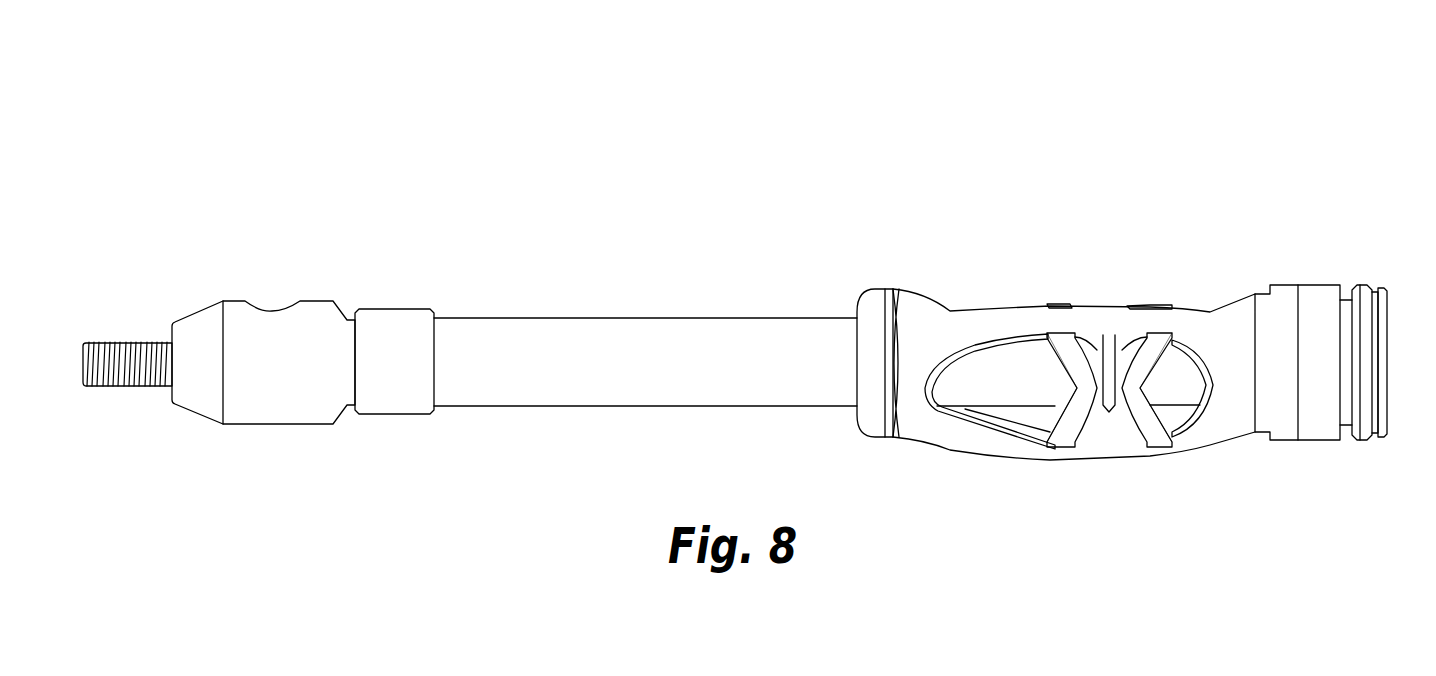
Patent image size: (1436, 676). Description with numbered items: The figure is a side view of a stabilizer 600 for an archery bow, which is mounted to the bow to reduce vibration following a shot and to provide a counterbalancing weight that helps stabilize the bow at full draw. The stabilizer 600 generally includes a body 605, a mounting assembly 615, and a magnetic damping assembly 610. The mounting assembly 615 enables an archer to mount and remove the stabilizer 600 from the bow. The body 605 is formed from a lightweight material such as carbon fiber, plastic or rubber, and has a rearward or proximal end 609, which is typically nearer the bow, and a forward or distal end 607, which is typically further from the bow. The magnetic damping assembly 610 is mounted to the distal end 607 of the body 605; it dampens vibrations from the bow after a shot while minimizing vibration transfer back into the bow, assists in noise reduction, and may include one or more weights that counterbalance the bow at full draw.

The stabilizer 600 is at (1075, 95).
The body 605 is at (872, 233).
The distal end 607 is at (1185, 258).
The proximal end 609 is at (462, 257).
The magnetic damping assembly 610 is at (1369, 240).
The mounting assembly 615 is at (309, 237).